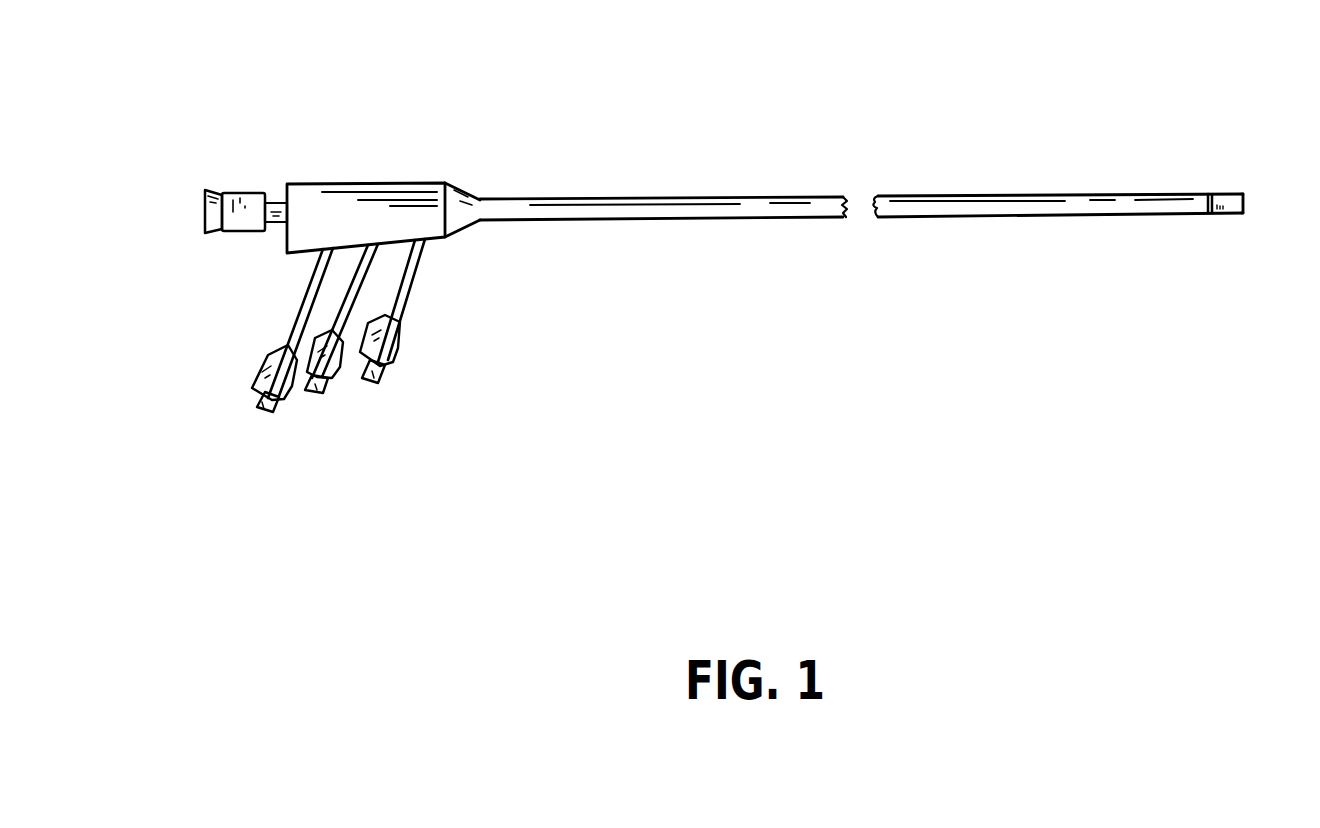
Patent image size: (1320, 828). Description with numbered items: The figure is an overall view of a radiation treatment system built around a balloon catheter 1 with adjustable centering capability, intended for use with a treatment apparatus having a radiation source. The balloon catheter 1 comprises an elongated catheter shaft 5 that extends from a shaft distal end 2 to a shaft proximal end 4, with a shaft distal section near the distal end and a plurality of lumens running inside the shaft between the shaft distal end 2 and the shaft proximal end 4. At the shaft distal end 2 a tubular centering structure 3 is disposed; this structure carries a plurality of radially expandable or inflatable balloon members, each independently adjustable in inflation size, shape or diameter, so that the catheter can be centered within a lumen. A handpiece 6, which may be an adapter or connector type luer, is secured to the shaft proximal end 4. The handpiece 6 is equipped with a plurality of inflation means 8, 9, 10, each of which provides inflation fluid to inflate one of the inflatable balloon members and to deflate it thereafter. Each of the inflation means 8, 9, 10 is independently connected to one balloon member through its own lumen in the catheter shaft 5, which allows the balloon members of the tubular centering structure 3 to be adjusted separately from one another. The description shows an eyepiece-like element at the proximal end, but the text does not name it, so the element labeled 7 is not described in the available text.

The balloon catheter 1 is at (650, 177).
The shaft distal end 2 is at (1245, 221).
The tubular centering structure 3 is at (1208, 227).
The shaft proximal end 4 is at (482, 194).
The catheter shaft 5 is at (932, 225).
The handpiece 6 is at (349, 175).
The eyepiece 7 is at (227, 180).
The inflation means 8 is at (393, 375).
The inflation means 9 is at (333, 390).
The inflation means 10 is at (283, 410).